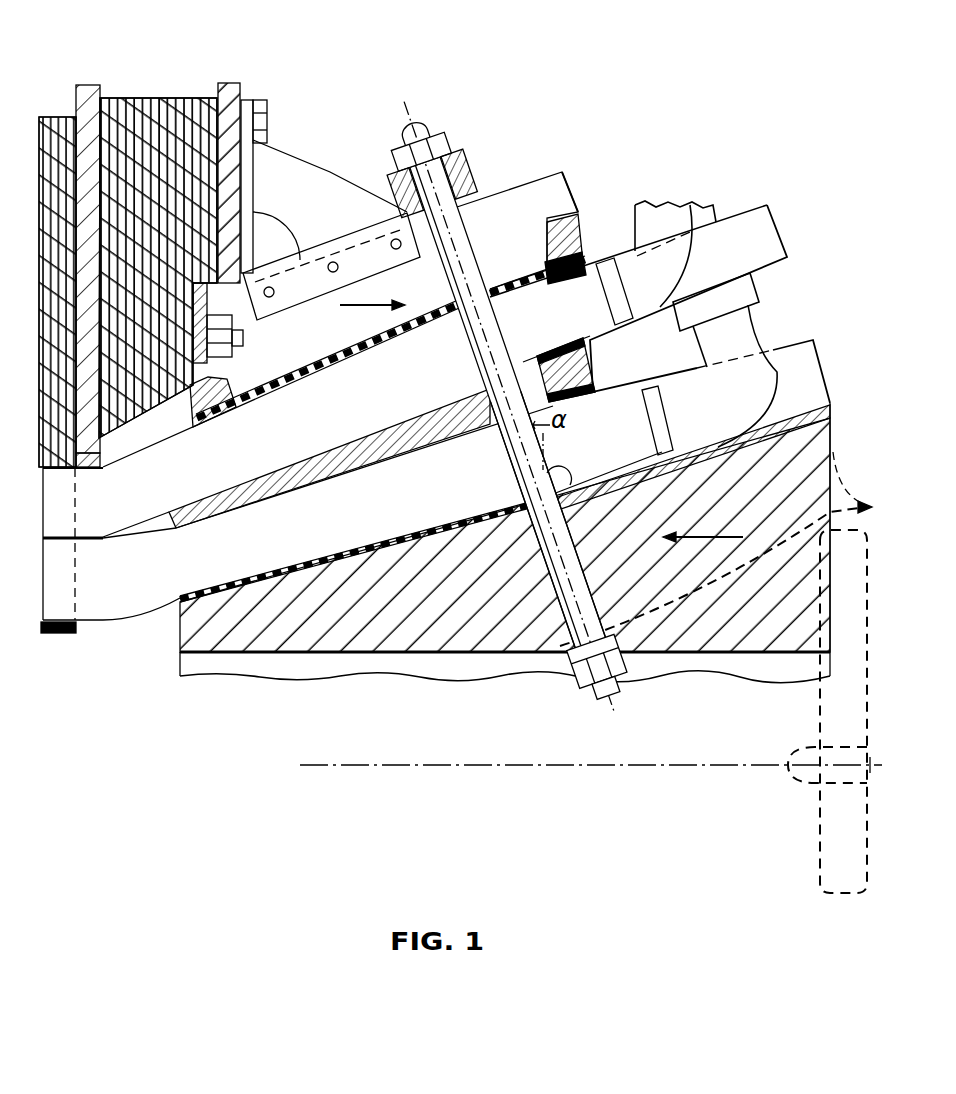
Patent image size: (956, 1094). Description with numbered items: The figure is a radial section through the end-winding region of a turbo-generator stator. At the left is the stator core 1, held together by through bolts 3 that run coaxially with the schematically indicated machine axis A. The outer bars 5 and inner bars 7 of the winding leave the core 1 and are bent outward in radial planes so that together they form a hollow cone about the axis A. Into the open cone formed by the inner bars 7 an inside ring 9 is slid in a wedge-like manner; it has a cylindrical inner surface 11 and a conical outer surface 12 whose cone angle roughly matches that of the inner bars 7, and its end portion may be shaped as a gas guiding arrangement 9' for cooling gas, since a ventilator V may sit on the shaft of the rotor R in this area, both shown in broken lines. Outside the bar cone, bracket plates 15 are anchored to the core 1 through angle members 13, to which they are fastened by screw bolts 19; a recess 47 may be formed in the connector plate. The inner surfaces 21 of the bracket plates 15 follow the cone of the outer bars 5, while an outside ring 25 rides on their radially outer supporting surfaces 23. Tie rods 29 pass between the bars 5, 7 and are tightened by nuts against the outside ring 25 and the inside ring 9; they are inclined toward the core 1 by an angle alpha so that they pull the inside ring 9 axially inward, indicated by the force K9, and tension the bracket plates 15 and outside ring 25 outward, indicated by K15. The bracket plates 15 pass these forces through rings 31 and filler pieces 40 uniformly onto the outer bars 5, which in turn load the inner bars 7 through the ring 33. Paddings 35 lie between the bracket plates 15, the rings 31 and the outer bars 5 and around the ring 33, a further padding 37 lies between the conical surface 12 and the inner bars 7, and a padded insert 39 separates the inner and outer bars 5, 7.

The stator core 1 is at (153, 97).
The through bolts 3 is at (246, 338).
The outer bars 5 is at (292, 431).
The inner bars 7 is at (295, 533).
The inside ring 9 is at (505, 565).
The gas guiding arrangement 9' is at (716, 579).
The cylindrical inner surface 11 is at (433, 654).
The conical outer surface 12 is at (410, 532).
The angle members 13 is at (300, 157).
The bracket plates 15 is at (511, 200).
The screw bolts 19 is at (333, 262).
The inner surfaces 21 is at (493, 288).
The radially outer supporting surfaces 23 is at (538, 172).
The outside ring 25 is at (447, 143).
The tie rods 29 is at (553, 566).
The rings 31 is at (577, 223).
The ring 33 is at (600, 364).
The paddings 35 is at (570, 270).
The padding 37 is at (790, 438).
The padded insert 39 is at (453, 428).
The filler pieces 40 is at (383, 351).
The recess 47 is at (281, 256).
The machine axis A is at (620, 767).
The rotor R is at (818, 800).
The ventilator V is at (818, 842).
The axial bracing force of the inner ring K9 is at (703, 523).
The bracing force of the bracket plates K15 is at (378, 298).